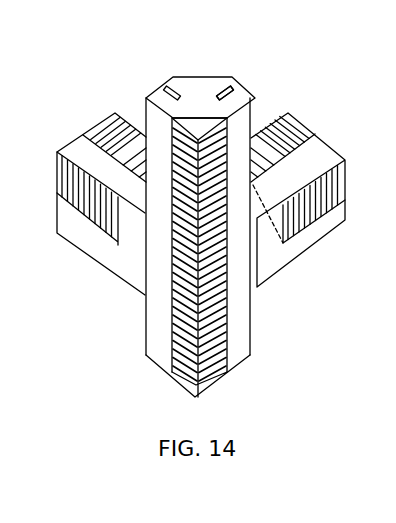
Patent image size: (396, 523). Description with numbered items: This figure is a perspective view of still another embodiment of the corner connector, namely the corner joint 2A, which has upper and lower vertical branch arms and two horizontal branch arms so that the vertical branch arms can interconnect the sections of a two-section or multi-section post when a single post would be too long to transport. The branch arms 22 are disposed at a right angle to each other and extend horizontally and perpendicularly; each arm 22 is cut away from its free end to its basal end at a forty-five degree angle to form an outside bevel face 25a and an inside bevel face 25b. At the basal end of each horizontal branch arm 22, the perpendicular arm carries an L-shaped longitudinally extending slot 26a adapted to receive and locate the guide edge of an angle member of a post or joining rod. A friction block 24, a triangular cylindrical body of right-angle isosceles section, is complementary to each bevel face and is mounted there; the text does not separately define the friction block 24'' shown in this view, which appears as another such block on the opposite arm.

The branch arm 22 is at (110, 117).
The friction block 24 is at (166, 248).
The ribs 24'' is at (319, 224).
The outside bevel face 25a is at (219, 80).
The inside bevel face 25b is at (200, 118).
The L-shaped longitudinally extending slot 26a is at (164, 92).
The corner joint 2A is at (126, 310).